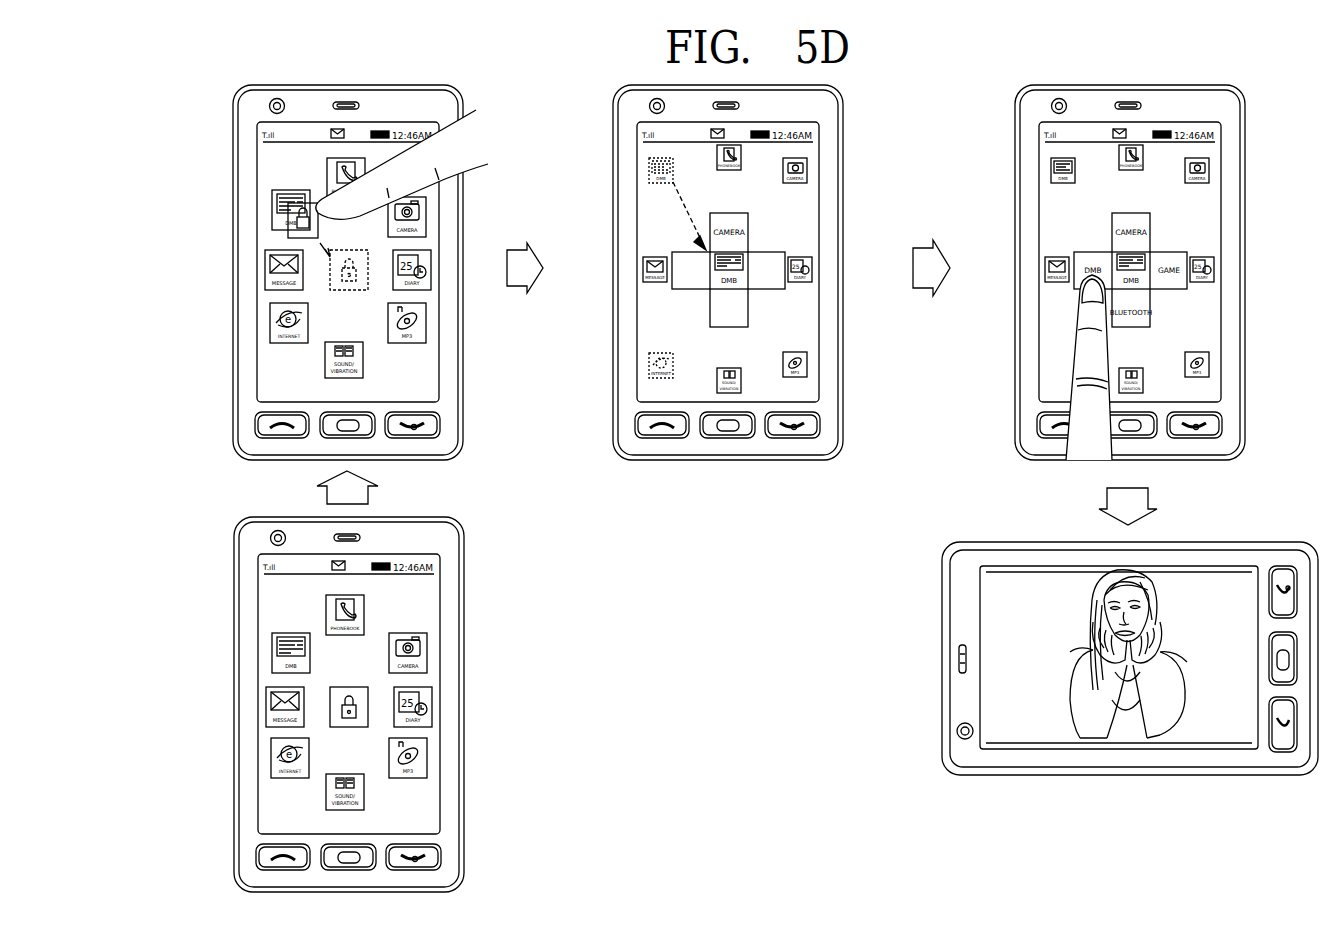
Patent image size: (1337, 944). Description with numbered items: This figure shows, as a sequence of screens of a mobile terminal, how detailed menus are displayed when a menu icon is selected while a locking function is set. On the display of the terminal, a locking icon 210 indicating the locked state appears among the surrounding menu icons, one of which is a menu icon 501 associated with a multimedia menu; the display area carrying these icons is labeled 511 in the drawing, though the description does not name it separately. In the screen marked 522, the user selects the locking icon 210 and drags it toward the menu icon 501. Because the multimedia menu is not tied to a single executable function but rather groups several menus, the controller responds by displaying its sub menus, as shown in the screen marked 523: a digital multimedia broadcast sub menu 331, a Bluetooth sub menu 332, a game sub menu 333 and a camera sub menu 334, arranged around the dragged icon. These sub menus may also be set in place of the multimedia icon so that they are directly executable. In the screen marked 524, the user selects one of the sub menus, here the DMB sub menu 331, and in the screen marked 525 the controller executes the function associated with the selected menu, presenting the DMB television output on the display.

The menu icon 501 is at (321, 704).
The display unit 511 is at (309, 694).
The locking icon 210 is at (273, 697).
The screen of dragging the locking icon to the menu icon 522 is at (258, 171).
The screen of displaying sub menus 523 is at (637, 171).
The camera sub menu 334 is at (708, 233).
The digital multimedia broadcast (DMB) sub menu 331 is at (672, 290).
The Bluetooth sub menu 332 is at (748, 315).
The game sub menu 333 is at (770, 284).
The screen of selecting a sub menu 524 is at (1040, 169).
The screen of executing the selected menu function 525 is at (945, 660).